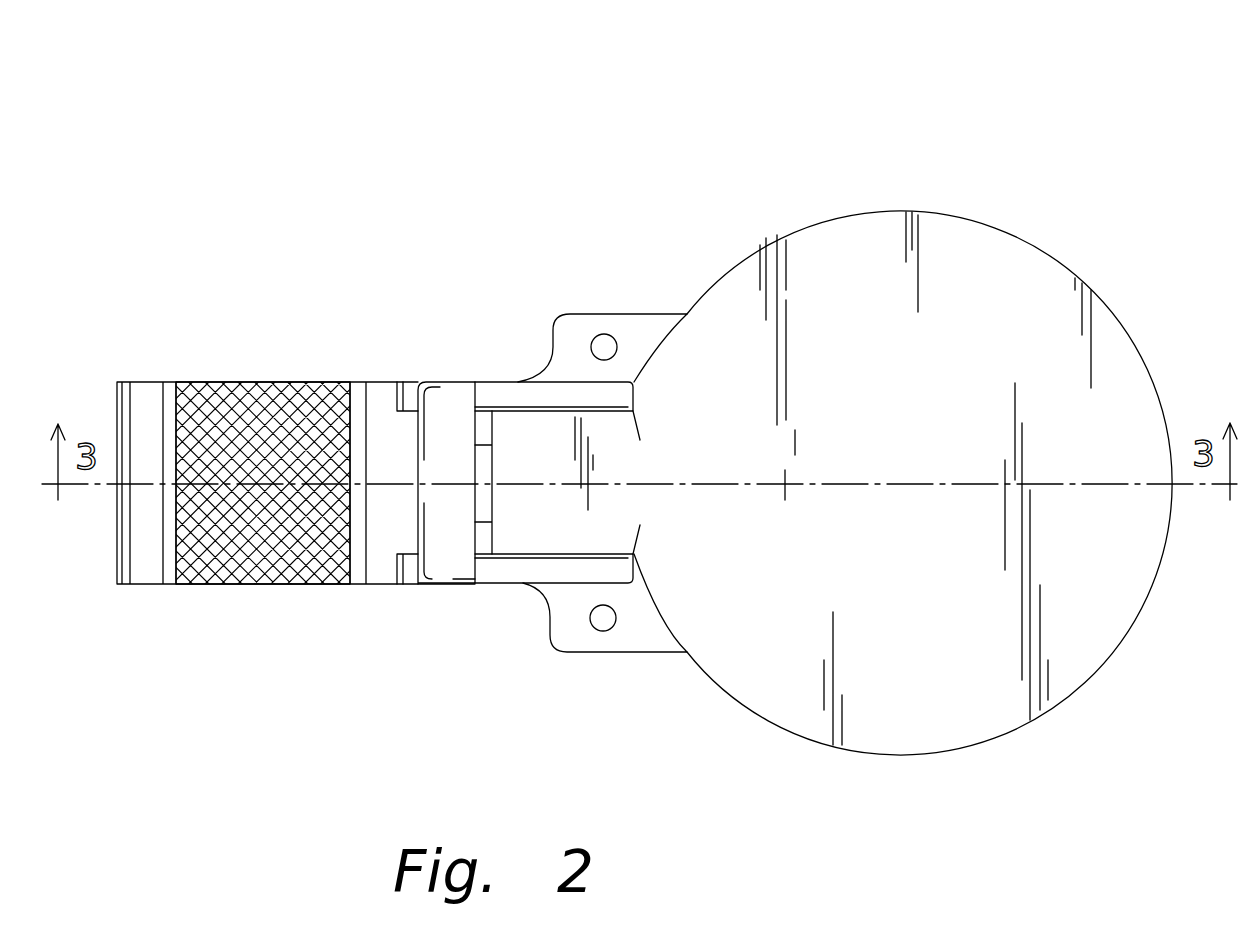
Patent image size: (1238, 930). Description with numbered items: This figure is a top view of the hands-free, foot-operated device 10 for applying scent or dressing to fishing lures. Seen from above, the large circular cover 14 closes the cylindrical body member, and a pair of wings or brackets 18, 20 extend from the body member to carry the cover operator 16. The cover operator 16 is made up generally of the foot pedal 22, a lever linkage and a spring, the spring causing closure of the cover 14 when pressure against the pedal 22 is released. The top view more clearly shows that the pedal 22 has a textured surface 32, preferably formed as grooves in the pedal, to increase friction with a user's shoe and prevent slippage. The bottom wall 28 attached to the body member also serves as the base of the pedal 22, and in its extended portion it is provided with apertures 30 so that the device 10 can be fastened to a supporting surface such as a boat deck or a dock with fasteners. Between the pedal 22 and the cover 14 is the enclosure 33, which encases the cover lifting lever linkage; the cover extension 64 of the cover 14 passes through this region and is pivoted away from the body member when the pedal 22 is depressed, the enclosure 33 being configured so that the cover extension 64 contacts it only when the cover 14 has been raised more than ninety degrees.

The hands-free, foot-operated device 10 is at (708, 148).
The cover 14 is at (923, 403).
The cover operator 16 is at (212, 591).
The bracket 18 is at (632, 382).
The bracket 20 is at (633, 583).
The foot pedal 22 is at (200, 382).
The bottom wall 28 is at (550, 615).
The aperture 30 is at (594, 339).
The textured surface 32 is at (288, 403).
The enclosure 33 is at (455, 382).
The cover extension 64 is at (507, 528).